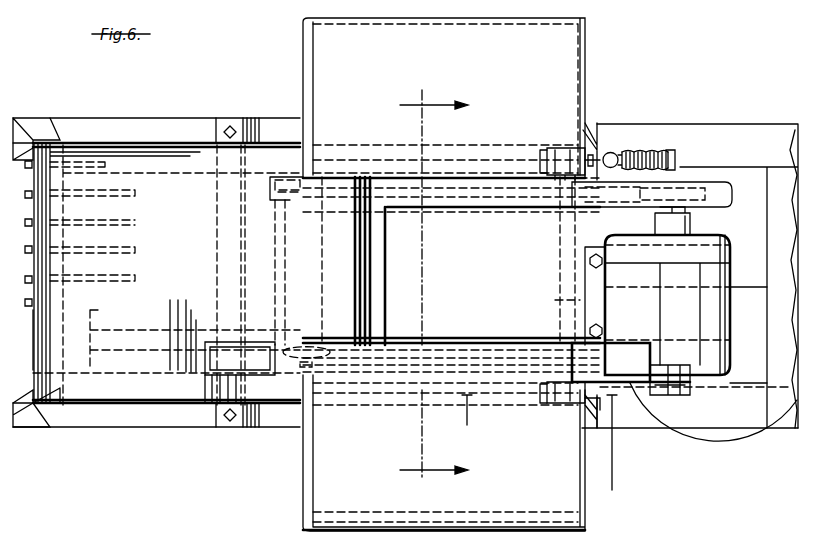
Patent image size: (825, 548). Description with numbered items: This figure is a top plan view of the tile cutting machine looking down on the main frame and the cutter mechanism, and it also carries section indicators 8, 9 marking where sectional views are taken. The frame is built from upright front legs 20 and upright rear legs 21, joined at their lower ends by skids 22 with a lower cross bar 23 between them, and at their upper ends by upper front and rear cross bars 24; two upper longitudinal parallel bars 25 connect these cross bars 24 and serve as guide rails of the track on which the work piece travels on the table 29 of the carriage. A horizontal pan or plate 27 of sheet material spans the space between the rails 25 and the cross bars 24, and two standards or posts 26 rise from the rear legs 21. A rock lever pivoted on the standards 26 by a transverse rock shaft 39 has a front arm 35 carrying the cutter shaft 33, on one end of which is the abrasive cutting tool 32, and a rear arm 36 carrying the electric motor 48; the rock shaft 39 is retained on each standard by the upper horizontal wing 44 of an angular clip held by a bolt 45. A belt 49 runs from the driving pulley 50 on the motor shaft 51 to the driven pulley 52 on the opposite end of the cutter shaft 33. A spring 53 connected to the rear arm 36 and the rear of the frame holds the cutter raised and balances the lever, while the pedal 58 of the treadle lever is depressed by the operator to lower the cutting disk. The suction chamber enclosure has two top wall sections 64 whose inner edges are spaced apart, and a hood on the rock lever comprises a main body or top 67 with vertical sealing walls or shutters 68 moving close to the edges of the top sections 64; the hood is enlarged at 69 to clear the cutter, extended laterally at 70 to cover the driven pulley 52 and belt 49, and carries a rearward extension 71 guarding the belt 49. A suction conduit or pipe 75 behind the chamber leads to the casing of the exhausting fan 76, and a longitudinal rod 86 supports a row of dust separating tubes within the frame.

The section line 8- 8 is at (434, 286).
The section line 9- 9 is at (538, 451).
The upright front legs 20 is at (30, 125).
The upright rear legs 21 is at (590, 128).
The skids 22 is at (120, 118).
The lower cross bar 23 is at (217, 268).
The upper front and rear cross bars 24 is at (33, 310).
The upper longitudinal parallel bars 25 is at (160, 143).
The standards or posts 26 is at (540, 148).
The horizontal pan or plate 27 is at (165, 223).
The table 29 is at (26, 237).
The cutting tool 32 is at (376, 360).
The cutter shaft 33 is at (295, 378).
The front arm 35 is at (435, 261).
The rear arm 36 is at (631, 362).
The rock shaft 39 is at (555, 306).
The upper horizontal wing 44 is at (560, 150).
The bolt 45 is at (598, 160).
The electric motor 48 is at (657, 291).
The belt 49 is at (490, 207).
The driving pulley 50 is at (712, 182).
The motor shaft 51 is at (680, 393).
The driven pulley 52 is at (292, 178).
The spring 53 is at (639, 149).
The pedal 58 is at (98, 314).
The top wall sections 64 is at (444, 274).
The main body or top 67 is at (310, 261).
The vertical sealing walls or shutters 68 is at (358, 150).
The enlarged hood portion 69 is at (200, 370).
The lateral hood extension 70 is at (350, 208).
The rearward extension 71 is at (540, 210).
The suction conduit or pipe 75 is at (690, 357).
The casing of exhausting fan 76 is at (713, 412).
The longitudinal rod 86 is at (110, 222).